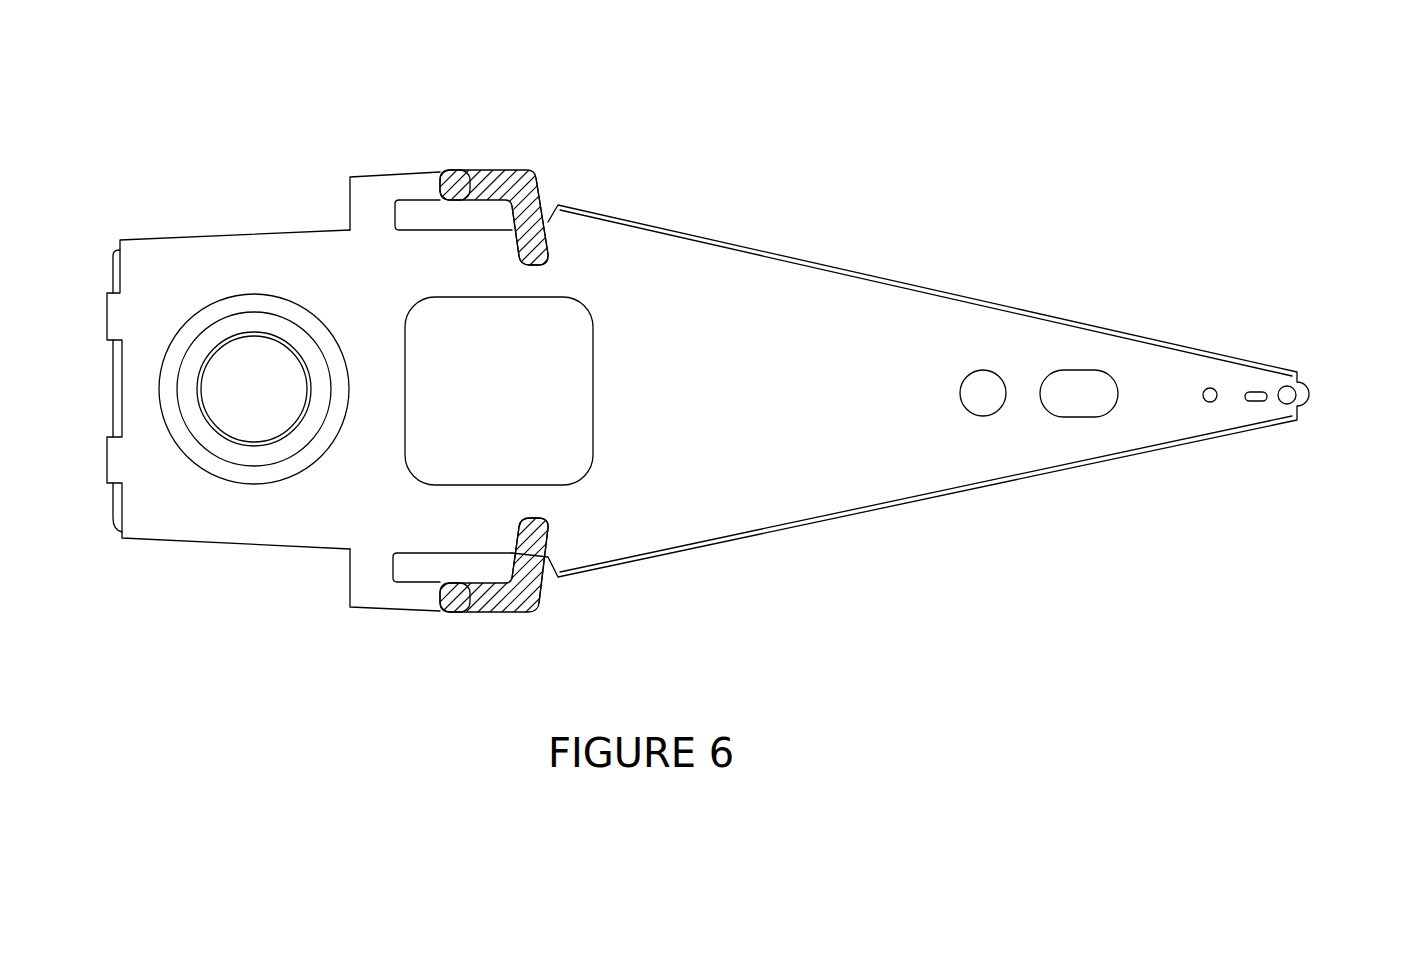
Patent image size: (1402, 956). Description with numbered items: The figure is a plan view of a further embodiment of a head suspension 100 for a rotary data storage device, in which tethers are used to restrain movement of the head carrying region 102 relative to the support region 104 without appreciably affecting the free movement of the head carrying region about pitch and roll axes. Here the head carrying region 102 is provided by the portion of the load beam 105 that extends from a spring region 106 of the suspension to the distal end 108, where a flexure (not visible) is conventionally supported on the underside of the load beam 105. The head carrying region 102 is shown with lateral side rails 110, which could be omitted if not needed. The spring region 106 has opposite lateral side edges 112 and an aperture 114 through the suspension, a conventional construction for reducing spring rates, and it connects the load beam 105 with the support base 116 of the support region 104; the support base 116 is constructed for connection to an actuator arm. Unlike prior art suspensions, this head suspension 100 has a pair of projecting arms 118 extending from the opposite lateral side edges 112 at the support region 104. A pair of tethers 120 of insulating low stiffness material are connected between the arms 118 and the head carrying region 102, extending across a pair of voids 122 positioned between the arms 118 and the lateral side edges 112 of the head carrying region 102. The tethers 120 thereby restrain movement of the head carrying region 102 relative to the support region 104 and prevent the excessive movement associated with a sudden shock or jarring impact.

The head suspension 100 is at (783, 175).
The head carrying region 102 is at (852, 262).
The support region 104 is at (298, 228).
The load beam 105 is at (802, 468).
The spring region 106 is at (485, 218).
The distal end 108 is at (1311, 388).
The lateral side rails 110 is at (942, 291).
The opposite lateral side edges 112 is at (428, 228).
The aperture 114 is at (547, 345).
The support base 116 is at (158, 258).
The projecting arms 118 is at (370, 188).
The tethers 120 is at (512, 166).
The voids 122 is at (455, 218).